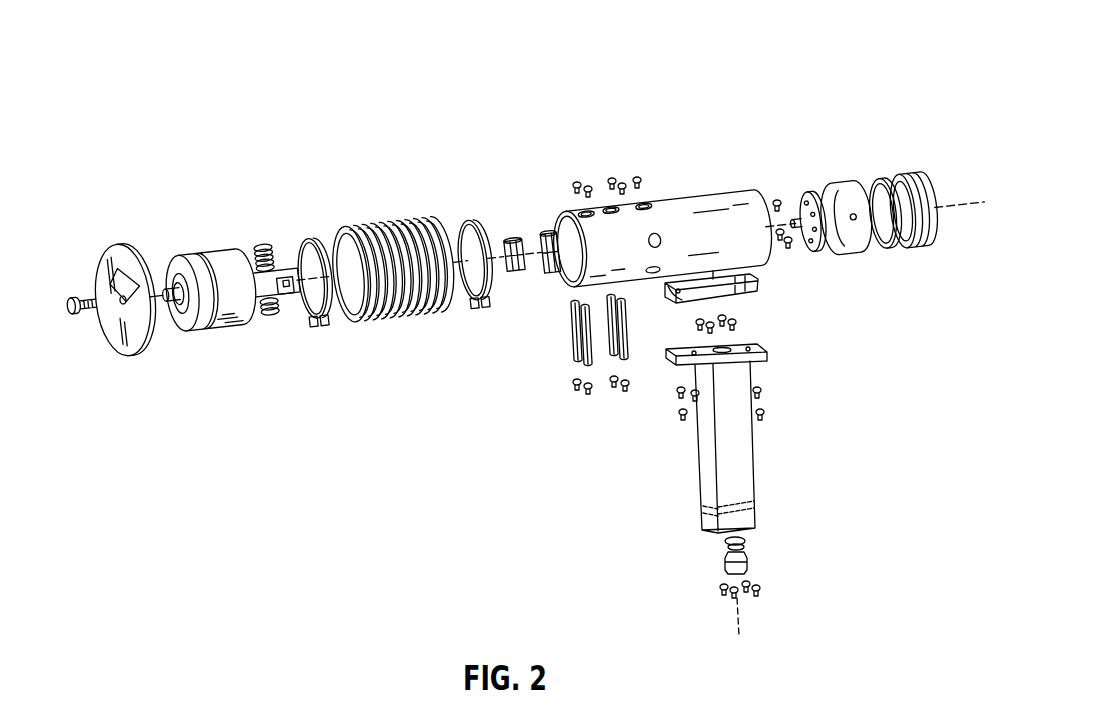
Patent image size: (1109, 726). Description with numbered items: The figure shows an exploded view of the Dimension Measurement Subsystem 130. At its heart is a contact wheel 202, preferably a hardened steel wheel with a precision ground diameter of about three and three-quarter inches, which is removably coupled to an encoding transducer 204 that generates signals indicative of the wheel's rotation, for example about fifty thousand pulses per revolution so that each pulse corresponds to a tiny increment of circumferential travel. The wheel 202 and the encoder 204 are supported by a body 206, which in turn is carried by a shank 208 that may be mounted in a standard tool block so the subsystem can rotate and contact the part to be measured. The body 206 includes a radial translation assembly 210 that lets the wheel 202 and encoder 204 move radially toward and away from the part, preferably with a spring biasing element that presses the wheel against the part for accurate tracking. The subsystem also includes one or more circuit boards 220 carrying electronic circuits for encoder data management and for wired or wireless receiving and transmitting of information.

The Dimension Measurement Subsystem 130 is at (787, 50).
The contact wheel 202 is at (110, 240).
The encoding transducer 204 is at (208, 244).
The body 206 is at (705, 185).
The shank 208 is at (762, 472).
The radial translation assembly 210 is at (543, 228).
The circuit boards 220 is at (812, 180).